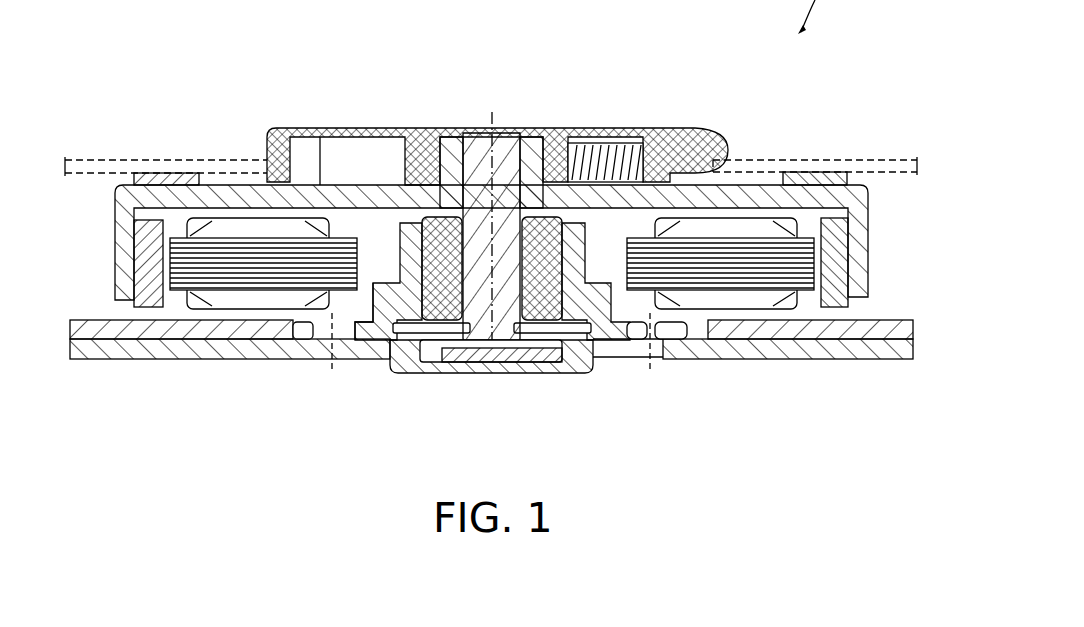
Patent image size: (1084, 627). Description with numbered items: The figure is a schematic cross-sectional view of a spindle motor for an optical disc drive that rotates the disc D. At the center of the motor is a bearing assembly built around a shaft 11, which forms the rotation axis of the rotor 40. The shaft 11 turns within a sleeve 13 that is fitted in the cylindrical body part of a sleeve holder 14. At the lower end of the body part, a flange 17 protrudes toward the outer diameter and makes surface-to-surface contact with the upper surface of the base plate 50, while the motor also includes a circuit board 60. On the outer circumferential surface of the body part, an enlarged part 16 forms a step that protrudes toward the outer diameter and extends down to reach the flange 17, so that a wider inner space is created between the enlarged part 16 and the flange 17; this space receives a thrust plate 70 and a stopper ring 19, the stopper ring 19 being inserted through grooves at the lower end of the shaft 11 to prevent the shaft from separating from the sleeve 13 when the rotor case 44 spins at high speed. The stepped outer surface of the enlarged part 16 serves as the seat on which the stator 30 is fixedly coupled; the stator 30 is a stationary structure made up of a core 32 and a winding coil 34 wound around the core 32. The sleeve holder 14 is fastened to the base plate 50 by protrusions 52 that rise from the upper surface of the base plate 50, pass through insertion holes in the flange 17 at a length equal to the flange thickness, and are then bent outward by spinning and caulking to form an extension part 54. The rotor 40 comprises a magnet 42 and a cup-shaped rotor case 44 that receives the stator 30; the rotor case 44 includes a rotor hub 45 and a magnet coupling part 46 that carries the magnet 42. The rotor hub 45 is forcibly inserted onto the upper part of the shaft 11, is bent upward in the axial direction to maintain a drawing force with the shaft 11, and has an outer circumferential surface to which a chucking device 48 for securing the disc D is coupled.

The shaft 11 is at (500, 138).
The sleeve 13 is at (553, 343).
The sleeve holder 14 is at (383, 343).
The enlarged part 16 is at (370, 270).
The flange 17 is at (300, 358).
The stopper ring 19 is at (513, 337).
The stator 30 is at (777, 318).
The core 32 is at (688, 273).
The winding coil 34 is at (730, 292).
The rotor 40 is at (526, 197).
The magnet 42 is at (840, 247).
The rotor case 44 is at (741, 195).
The rotor hub 45 is at (527, 150).
The magnet coupling part 46 is at (860, 283).
The chucking device 48 is at (615, 131).
The base plate 50 is at (818, 350).
The protrusion 52 is at (640, 338).
The extension part 54 is at (660, 322).
The circuit board 60 is at (491, 376).
The thrust plate 70 is at (445, 375).
The disc D is at (820, 160).